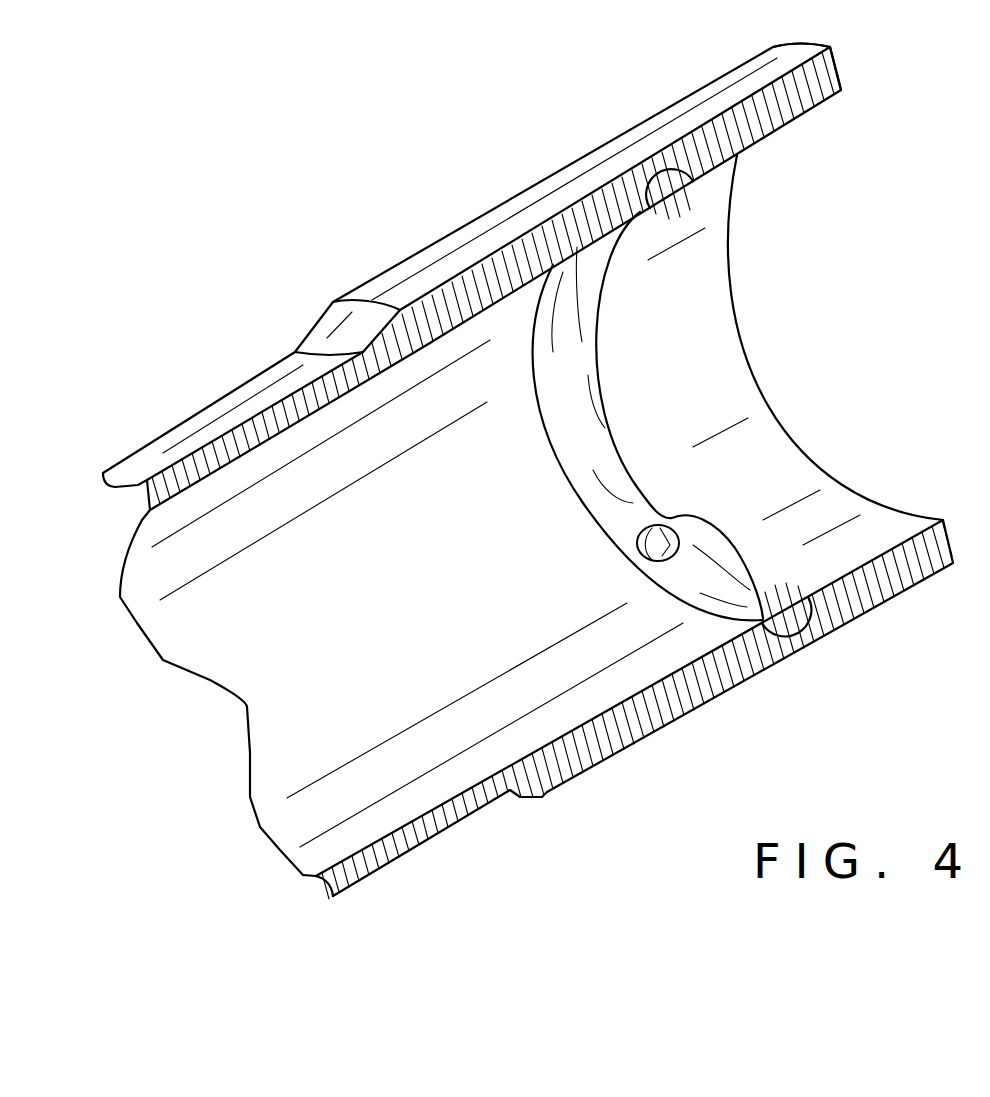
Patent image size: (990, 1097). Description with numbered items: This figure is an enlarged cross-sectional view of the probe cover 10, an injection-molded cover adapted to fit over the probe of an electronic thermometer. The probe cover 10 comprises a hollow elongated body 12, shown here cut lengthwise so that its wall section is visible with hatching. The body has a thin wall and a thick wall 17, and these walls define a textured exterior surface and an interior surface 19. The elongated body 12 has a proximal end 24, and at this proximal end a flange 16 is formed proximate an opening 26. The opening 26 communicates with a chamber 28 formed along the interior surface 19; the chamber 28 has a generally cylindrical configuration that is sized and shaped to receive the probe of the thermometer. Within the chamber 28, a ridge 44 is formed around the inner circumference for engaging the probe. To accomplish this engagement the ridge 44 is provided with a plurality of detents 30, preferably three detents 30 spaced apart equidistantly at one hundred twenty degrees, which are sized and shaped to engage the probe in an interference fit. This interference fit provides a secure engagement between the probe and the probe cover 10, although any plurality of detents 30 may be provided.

The probe cover 10 is at (371, 228).
The hollow elongated body 12 is at (126, 408).
The flange 16 is at (548, 222).
The thick wall 17 is at (229, 391).
The interior surface 19 is at (347, 453).
The proximal end 24 is at (842, 80).
The opening 26 is at (810, 440).
The chamber 28 is at (578, 683).
The detents 30 is at (768, 618).
The ridge 44 is at (583, 410).